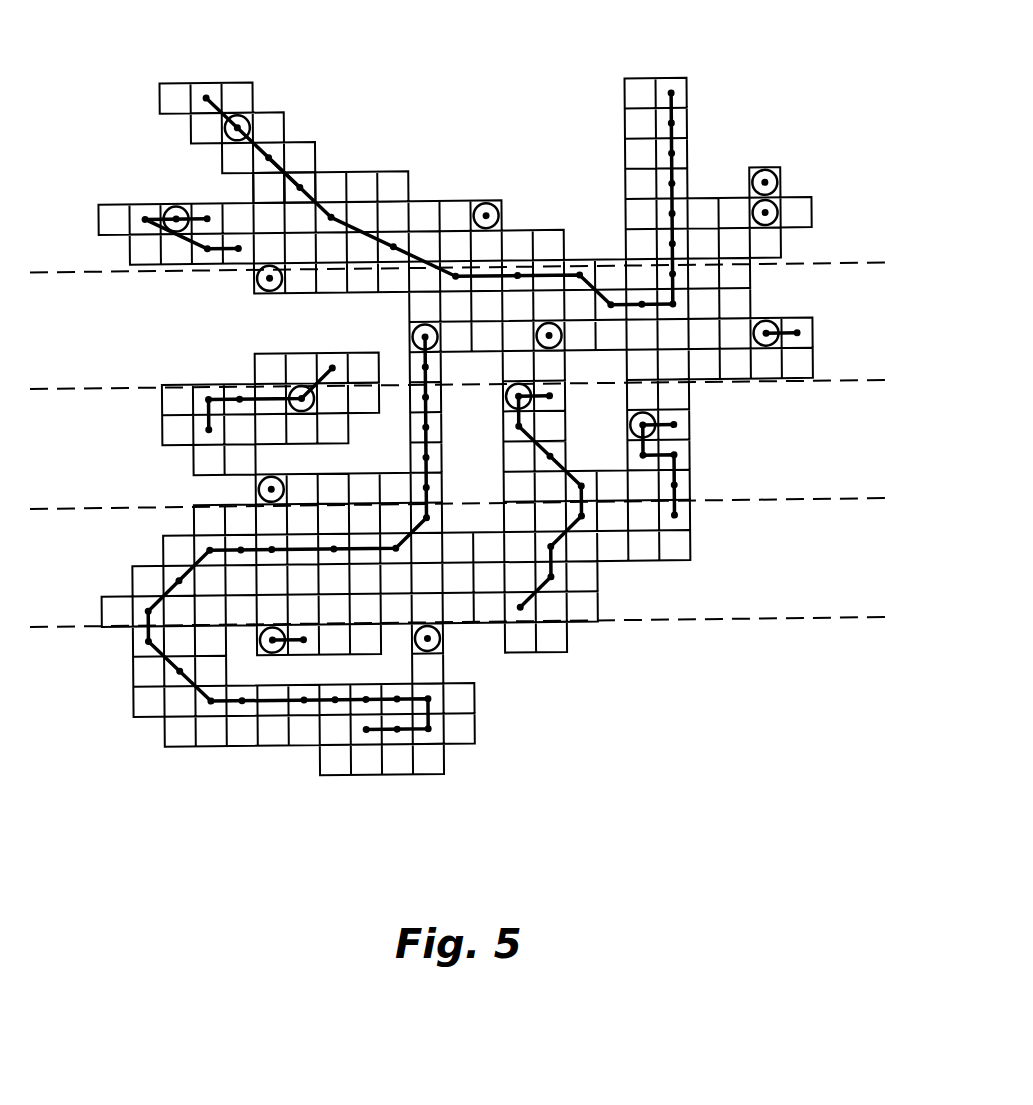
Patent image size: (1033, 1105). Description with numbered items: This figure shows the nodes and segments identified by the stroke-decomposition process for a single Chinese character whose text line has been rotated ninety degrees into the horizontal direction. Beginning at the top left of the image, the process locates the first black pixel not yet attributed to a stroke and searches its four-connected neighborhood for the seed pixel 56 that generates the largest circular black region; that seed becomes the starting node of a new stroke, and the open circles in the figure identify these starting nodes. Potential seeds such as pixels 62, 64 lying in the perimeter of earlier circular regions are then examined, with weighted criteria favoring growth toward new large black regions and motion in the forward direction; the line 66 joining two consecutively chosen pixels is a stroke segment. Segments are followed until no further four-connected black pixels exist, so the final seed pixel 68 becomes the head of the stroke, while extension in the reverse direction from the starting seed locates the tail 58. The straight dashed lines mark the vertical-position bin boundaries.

The seed pixel 56 is at (240, 118).
The tail of the stroke 58 is at (207, 96).
The potential seed pixel 62 is at (272, 165).
The potential seed pixel 64 is at (302, 184).
The stroke segment line 66 is at (274, 172).
The final seed pixel 68 is at (672, 92).